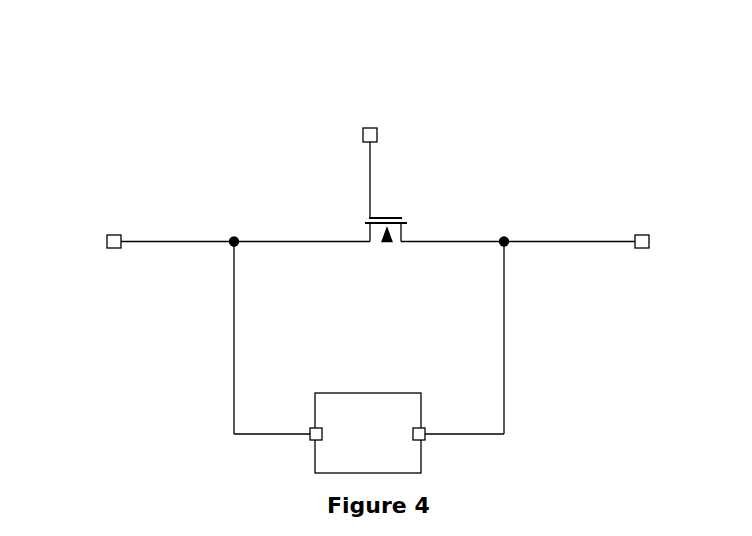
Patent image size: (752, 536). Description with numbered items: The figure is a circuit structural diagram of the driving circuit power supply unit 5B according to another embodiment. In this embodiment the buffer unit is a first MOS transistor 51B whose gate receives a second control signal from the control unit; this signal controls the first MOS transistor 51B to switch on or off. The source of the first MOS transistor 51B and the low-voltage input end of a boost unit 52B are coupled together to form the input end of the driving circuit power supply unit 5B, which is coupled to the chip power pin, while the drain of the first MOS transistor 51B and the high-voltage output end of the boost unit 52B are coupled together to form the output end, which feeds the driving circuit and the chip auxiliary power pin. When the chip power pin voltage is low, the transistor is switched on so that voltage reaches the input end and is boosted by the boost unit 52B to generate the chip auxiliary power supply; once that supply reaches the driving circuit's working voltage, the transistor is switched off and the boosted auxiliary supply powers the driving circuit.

The driving circuit power supply unit 5B is at (440, 86).
The first MOS transistor 51B is at (403, 203).
The boost unit 52B is at (384, 393).